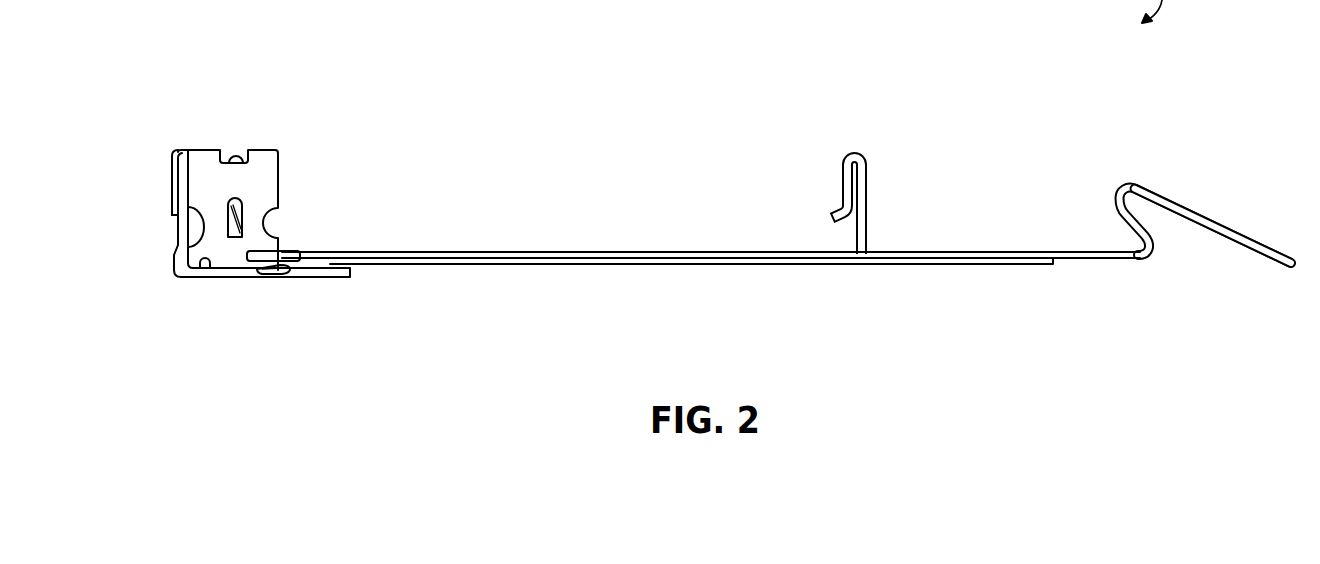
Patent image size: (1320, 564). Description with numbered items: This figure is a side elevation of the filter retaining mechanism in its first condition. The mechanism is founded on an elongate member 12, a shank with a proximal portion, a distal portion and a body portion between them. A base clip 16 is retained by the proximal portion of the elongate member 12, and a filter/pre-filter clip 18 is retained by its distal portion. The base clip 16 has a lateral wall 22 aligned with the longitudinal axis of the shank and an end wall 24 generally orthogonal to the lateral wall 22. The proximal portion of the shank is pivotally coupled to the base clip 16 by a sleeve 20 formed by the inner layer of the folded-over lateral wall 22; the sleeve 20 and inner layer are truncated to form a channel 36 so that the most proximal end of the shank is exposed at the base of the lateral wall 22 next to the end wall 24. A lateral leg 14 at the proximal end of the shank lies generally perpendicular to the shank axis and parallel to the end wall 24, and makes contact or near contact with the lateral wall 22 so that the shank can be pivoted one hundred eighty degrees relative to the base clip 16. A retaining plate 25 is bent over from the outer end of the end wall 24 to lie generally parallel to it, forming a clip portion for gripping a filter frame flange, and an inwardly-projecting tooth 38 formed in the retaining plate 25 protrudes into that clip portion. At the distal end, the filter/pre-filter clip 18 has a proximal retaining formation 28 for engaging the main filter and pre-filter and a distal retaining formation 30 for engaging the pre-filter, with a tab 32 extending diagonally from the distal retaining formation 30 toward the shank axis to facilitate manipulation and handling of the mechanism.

The elongate member 12 is at (604, 251).
The lateral leg 14 is at (218, 278).
The base clip 16 is at (290, 143).
The filter/pre-filter clip 18 is at (1018, 134).
The sleeve 20 is at (296, 250).
The lateral wall 22 is at (263, 278).
The end wall 24 is at (170, 177).
The retaining plate 25 is at (176, 268).
The proximal retaining formation 28 is at (840, 186).
The distal retaining formation 30 is at (1126, 188).
The tab 32 is at (1200, 202).
The channel 36 is at (182, 277).
The tooth 38 is at (183, 238).